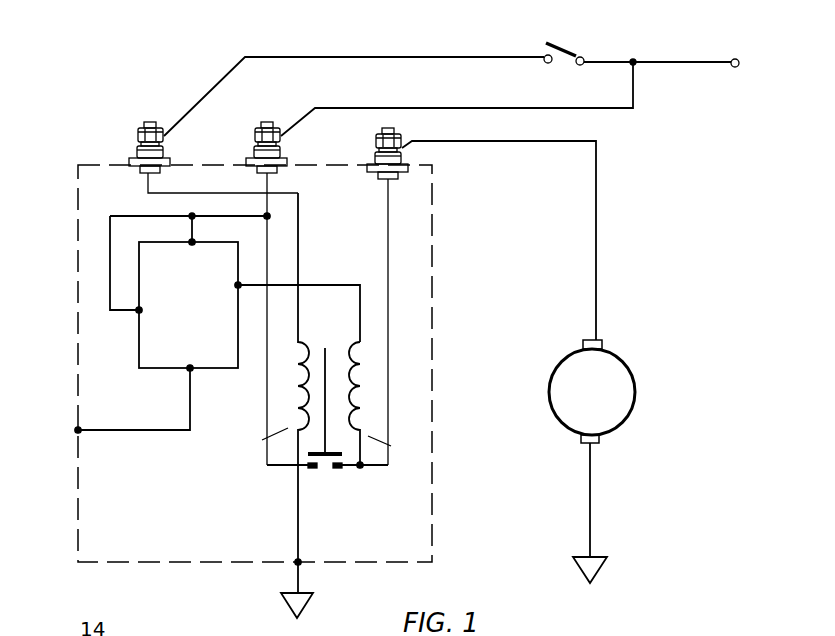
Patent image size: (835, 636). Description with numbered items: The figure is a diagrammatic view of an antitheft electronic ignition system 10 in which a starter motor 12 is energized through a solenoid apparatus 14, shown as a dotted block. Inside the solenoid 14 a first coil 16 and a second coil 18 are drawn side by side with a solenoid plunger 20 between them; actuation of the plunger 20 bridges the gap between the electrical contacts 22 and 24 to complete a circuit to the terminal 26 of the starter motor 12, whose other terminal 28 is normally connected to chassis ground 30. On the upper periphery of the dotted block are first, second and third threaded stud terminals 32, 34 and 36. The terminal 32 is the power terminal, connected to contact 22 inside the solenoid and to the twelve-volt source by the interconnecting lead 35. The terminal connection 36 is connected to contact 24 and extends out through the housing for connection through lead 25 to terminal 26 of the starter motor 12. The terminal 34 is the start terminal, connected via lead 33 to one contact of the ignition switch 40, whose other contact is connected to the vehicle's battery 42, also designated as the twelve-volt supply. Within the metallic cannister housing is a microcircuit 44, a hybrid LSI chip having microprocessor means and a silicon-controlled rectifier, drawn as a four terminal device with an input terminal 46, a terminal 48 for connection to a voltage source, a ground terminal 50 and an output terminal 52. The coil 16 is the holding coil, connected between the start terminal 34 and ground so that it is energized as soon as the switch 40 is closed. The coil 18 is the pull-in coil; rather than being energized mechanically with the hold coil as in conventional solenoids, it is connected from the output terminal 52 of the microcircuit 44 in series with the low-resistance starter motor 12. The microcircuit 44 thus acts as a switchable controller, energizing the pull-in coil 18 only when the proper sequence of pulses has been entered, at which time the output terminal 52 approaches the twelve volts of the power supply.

The antitheft electronic ignition system 10 is at (613, 222).
The starter motor 12 is at (637, 384).
The solenoid apparatus 14 is at (437, 345).
The first coil 16 is at (290, 403).
The second coil 18 is at (360, 408).
The solenoid plunger 20 is at (327, 350).
The electrical contact 22 is at (316, 471).
The electrical contact 24 is at (338, 471).
The lead 25 is at (597, 281).
The terminal 26 is at (601, 340).
The terminal 28 is at (598, 443).
The chassis ground 30 is at (304, 611).
The first threaded stud terminal 32 is at (256, 158).
The lead 33 is at (330, 54).
The second threaded stud terminal 34 is at (137, 158).
The interconnecting lead 35 is at (398, 107).
The third threaded stud terminal 36 is at (376, 163).
The ignition switch 40 is at (542, 42).
The battery 42 is at (733, 59).
The microcircuit 44 is at (138, 271).
The input terminal 46 is at (190, 244).
The voltage source terminal 48 is at (141, 312).
The ground terminal 50 is at (188, 370).
The output terminal 52 is at (235, 287).